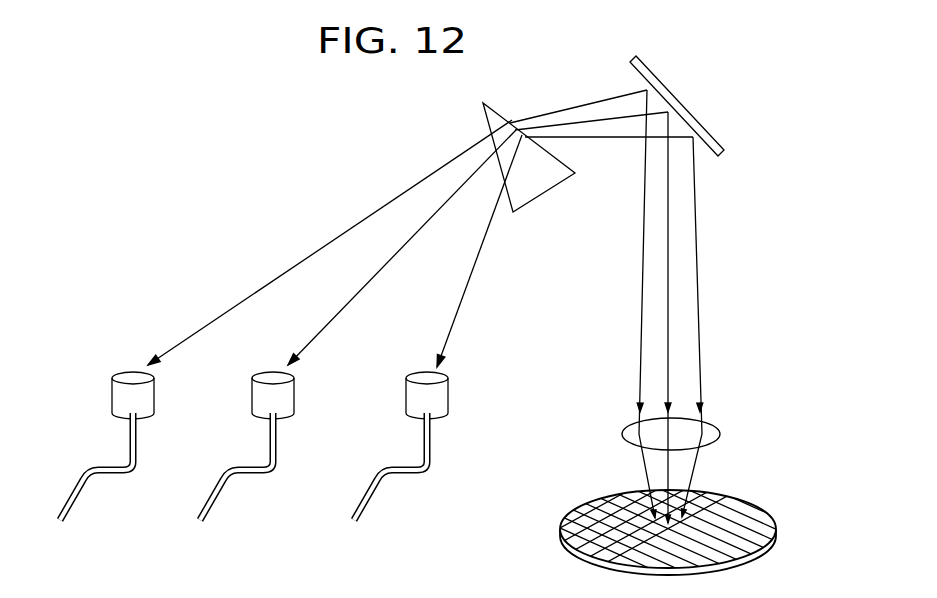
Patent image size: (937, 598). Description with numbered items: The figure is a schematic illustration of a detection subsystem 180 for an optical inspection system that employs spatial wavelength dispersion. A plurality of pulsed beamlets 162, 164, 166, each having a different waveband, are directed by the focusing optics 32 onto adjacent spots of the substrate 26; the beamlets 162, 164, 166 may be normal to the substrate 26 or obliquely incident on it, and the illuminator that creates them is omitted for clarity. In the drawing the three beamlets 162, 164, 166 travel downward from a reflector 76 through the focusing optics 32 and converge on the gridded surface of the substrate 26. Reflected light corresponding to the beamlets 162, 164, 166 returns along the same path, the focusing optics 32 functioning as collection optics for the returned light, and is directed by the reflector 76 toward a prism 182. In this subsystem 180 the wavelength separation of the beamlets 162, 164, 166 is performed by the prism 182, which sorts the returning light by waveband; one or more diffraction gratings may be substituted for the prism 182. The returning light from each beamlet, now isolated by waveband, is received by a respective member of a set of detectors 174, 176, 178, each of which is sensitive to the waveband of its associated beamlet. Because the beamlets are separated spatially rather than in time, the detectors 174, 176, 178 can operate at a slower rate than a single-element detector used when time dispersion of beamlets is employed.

The detection subsystem 180 is at (247, 137).
The reflector 76 is at (690, 118).
The prism 182 is at (528, 210).
The pulsed beamlet 162 is at (643, 262).
The pulsed beamlet 164 is at (697, 232).
The pulsed beamlet 166 is at (668, 322).
The focusing optics 32 is at (622, 433).
The substrate 26 is at (753, 505).
The detector 174 is at (112, 406).
The detector 176 is at (252, 406).
The detector 178 is at (406, 406).